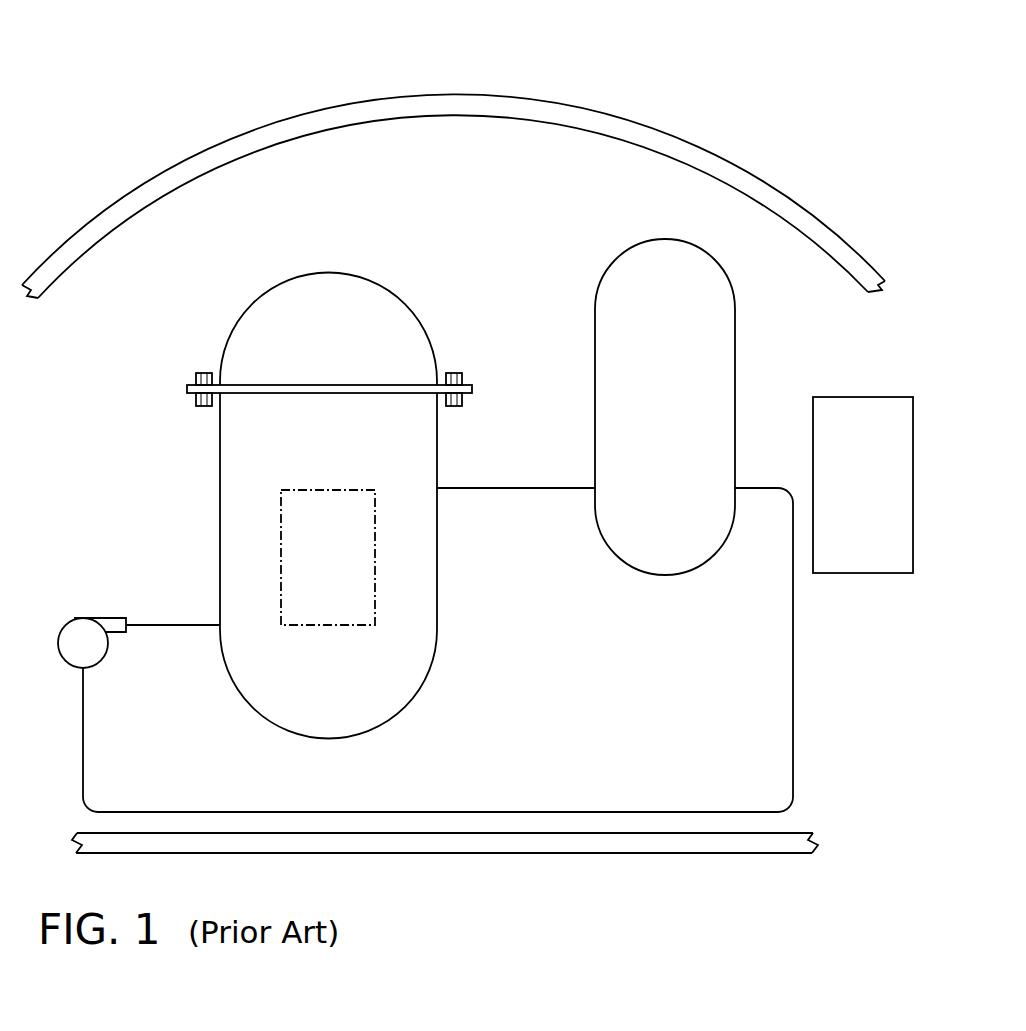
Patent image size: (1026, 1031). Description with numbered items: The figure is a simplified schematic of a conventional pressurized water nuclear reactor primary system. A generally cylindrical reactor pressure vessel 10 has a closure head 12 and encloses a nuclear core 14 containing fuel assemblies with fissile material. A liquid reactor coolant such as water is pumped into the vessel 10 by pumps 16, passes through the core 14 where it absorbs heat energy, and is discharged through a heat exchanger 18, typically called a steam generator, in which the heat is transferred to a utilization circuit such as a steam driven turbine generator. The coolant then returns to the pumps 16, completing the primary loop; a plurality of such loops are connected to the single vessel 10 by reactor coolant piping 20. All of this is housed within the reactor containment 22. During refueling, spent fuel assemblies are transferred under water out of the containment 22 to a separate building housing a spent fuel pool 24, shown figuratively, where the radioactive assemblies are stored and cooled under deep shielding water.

The reactor pressure vessel 10 is at (343, 566).
The closure head 12 is at (233, 330).
The nuclear core 14 is at (280, 544).
The pumps 16 is at (77, 617).
The heat exchanger 18 is at (735, 345).
The reactor coolant piping 20 is at (793, 742).
The reactor containment 22 is at (562, 105).
The spent fuel pool 24 is at (828, 398).